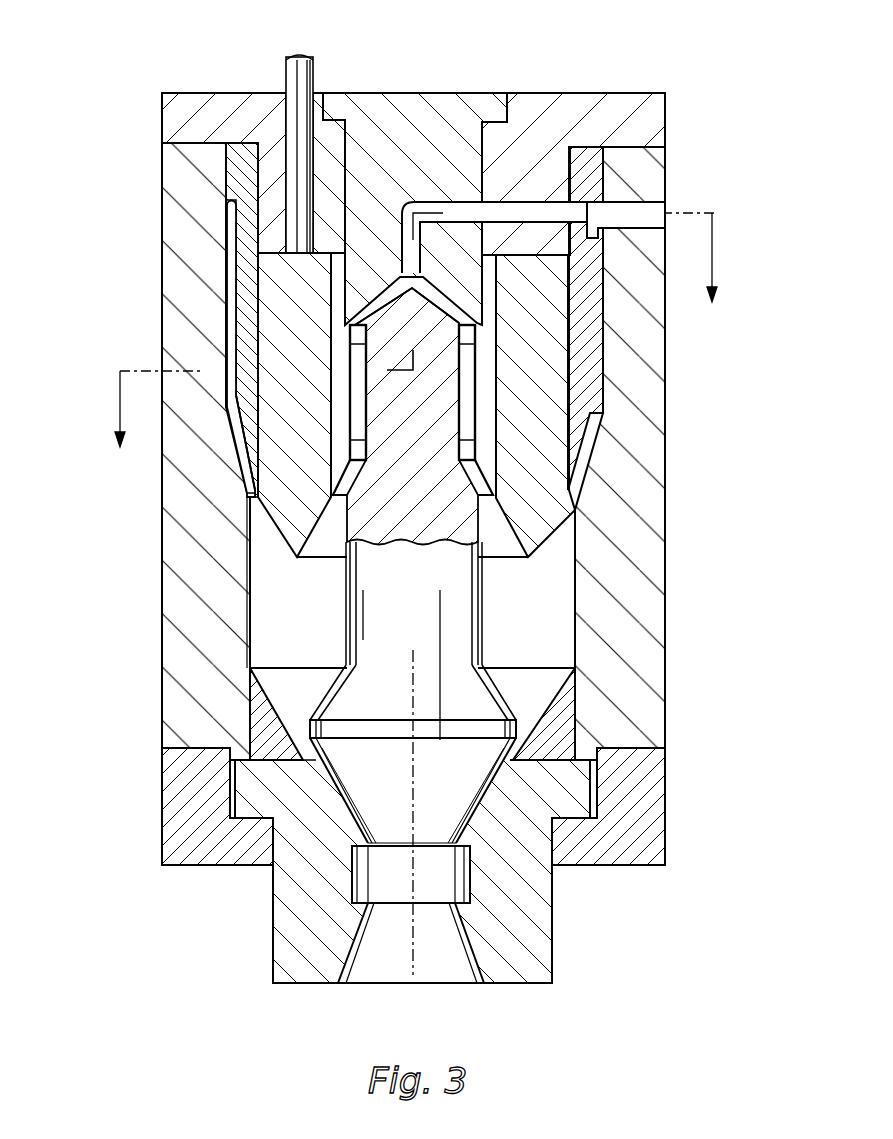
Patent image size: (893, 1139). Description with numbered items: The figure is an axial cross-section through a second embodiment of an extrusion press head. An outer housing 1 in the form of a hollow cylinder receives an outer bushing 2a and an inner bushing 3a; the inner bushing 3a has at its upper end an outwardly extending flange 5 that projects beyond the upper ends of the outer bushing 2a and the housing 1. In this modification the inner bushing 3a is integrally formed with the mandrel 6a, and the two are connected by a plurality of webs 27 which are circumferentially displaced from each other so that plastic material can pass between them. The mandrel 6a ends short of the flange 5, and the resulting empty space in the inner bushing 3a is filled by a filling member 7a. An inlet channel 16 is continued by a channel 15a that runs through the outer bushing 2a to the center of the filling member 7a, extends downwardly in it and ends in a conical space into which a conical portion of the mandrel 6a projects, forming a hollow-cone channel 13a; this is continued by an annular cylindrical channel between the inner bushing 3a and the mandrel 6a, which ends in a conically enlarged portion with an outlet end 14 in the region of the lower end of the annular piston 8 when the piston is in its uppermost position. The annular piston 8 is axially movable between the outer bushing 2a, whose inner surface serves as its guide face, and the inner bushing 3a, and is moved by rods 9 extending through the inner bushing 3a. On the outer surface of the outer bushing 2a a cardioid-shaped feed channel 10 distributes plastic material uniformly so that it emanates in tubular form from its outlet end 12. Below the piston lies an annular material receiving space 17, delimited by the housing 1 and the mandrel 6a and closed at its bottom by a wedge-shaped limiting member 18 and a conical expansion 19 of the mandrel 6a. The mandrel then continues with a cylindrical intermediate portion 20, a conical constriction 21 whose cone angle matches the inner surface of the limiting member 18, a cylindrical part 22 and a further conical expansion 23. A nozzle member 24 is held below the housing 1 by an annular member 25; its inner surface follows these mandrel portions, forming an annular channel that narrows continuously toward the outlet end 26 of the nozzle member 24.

The outer housing 1 is at (640, 605).
The outer bushing 2a is at (238, 172).
The inner bushing 3a is at (272, 227).
The flange 5 is at (182, 113).
The mandrel 6a is at (428, 609).
The filling member 7a is at (438, 120).
The annular piston 8 is at (302, 395).
The rods 9 is at (295, 75).
The cardioid-shaped feed channel 10 is at (215, 305).
The outlet end of the cardioid-shaped feed channel 12 is at (245, 493).
The hollow-cone channel 13a is at (397, 293).
The outlet end 14 is at (335, 498).
The channel 15a is at (523, 215).
The inlet channel 16 is at (648, 207).
The annular material receiving space 17 is at (555, 585).
The limiting member 18 is at (262, 704).
The conical expansion 19 is at (428, 704).
The cylindrical intermediate portion 20 is at (457, 727).
The conical constriction 21 is at (424, 797).
The cylindrical part 22 is at (425, 886).
The conical expansion 23 is at (425, 957).
The nozzle member 24 is at (300, 920).
The annular member 25 is at (190, 804).
The outlet end of the nozzle member 26 is at (337, 990).
The webs 27 is at (358, 405).